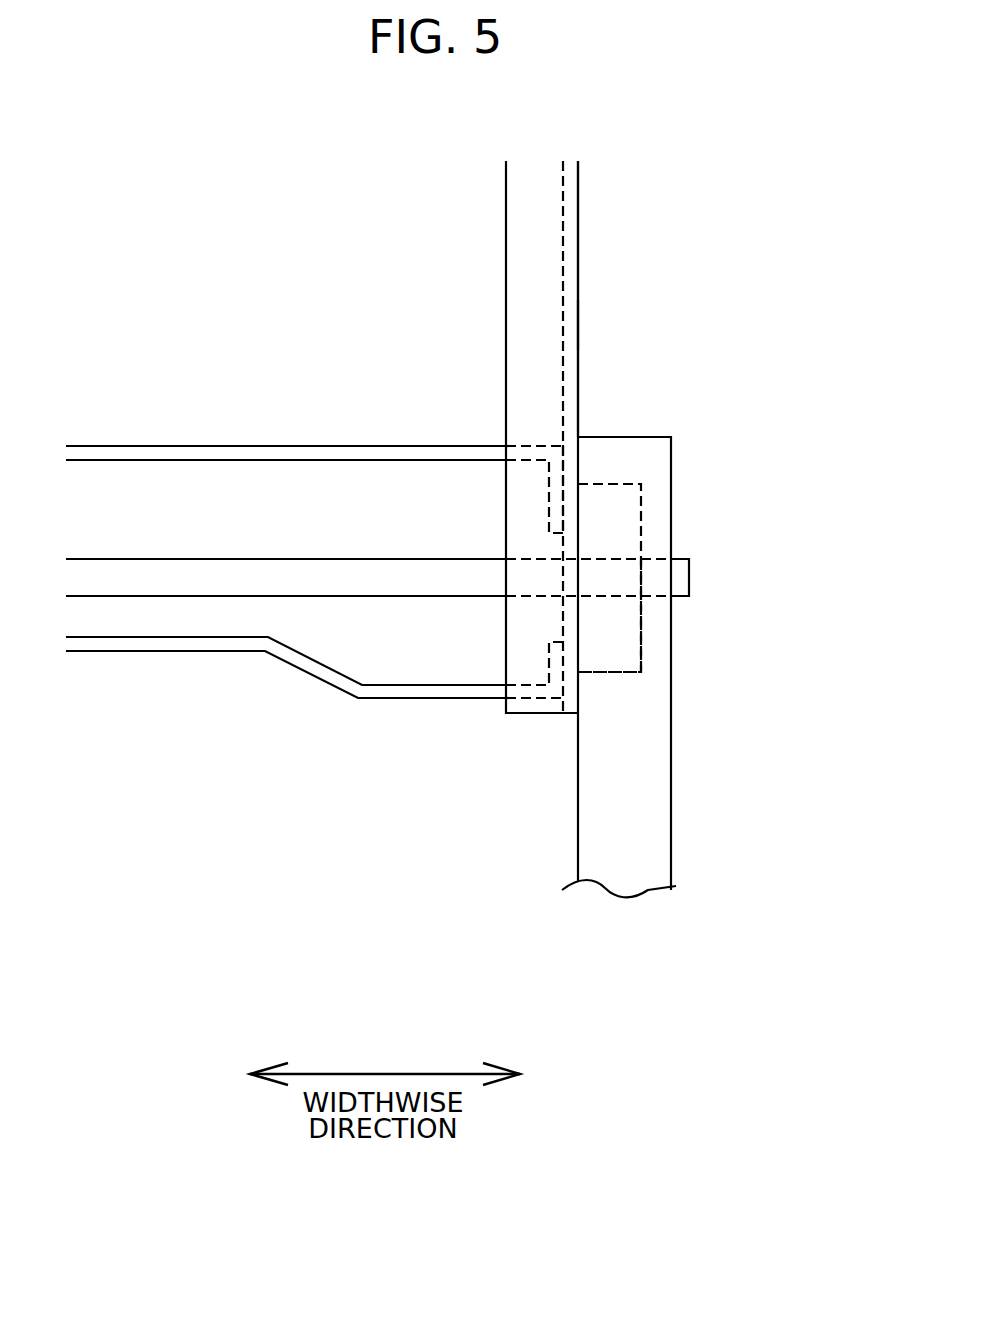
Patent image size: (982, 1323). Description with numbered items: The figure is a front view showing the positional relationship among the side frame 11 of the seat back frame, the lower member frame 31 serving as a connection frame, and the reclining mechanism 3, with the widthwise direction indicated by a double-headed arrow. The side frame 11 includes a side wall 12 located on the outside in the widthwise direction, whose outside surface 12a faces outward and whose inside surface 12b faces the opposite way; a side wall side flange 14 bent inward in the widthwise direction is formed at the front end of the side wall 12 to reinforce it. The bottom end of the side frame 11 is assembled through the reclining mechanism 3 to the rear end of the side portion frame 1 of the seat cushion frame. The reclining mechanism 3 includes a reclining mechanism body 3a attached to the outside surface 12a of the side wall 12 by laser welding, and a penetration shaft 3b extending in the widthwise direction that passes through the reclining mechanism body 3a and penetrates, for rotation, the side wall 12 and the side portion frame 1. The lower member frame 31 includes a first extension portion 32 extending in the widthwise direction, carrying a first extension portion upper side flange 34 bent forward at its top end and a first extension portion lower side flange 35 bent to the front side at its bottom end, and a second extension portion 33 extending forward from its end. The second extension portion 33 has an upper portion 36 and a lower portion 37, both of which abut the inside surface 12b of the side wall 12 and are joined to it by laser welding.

The side portion frame 1 is at (640, 818).
The side frame 11 is at (588, 186).
The side wall 12 is at (572, 263).
The outside surface 12a is at (578, 326).
The inside surface 12b is at (562, 224).
The side wall side flange 14 is at (522, 291).
The reclining mechanism 3 is at (642, 520).
The reclining mechanism body 3a is at (620, 640).
The penetration shaft 3b is at (330, 578).
The lower member frame 31 is at (335, 442).
The first extension portion 32 is at (137, 485).
The second extension portion 33 is at (546, 512).
The first extension portion upper side flange 34 is at (235, 455).
The first extension portion lower side flange 35 is at (188, 645).
The upper portion 36 is at (562, 472).
The lower portion 37 is at (553, 668).